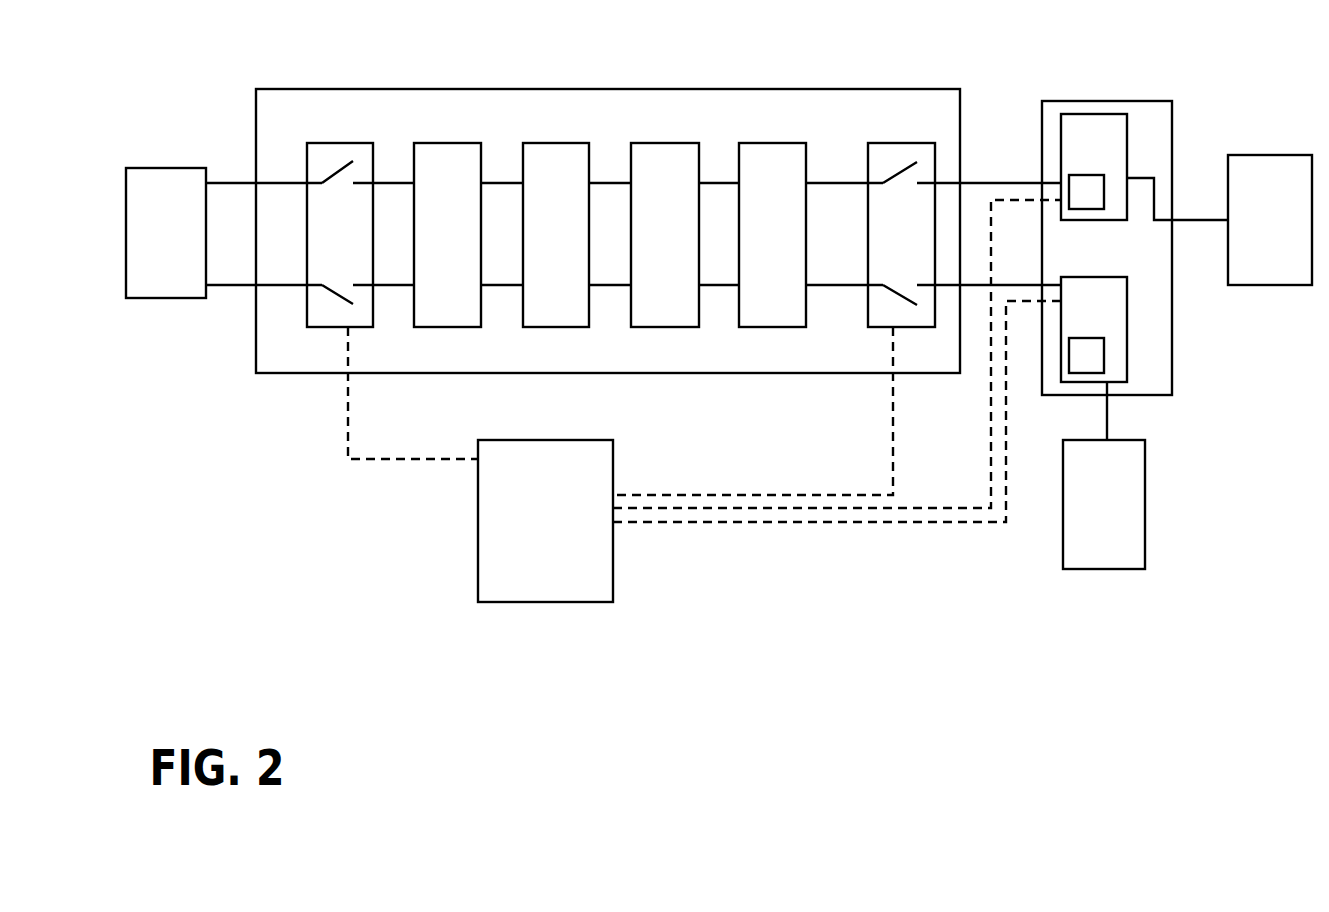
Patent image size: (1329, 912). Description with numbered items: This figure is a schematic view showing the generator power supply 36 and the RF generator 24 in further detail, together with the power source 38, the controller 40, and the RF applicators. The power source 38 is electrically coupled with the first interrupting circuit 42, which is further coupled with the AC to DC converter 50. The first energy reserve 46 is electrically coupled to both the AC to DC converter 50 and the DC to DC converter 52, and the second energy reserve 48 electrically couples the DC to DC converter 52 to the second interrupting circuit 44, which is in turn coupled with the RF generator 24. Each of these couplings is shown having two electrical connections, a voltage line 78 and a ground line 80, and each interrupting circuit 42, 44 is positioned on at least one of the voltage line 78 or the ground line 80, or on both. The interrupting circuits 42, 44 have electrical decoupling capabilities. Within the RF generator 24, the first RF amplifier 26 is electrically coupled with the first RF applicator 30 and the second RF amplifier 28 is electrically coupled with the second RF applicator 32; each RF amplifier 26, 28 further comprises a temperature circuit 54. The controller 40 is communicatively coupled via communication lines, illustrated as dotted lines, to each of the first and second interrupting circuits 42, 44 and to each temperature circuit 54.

The RF generator 24 is at (1099, 263).
The first RF amplifier 26 is at (1088, 160).
The second RF amplifier 28 is at (1088, 319).
The first RF applicator 30 is at (1258, 230).
The second RF applicator 32 is at (1097, 523).
The generator power supply 36 is at (493, 128).
The power source 38 is at (156, 253).
The controller 40 is at (538, 535).
The first interrupting circuit 42 is at (330, 253).
The second interrupting circuit 44 is at (891, 253).
The first energy reserve 46 is at (546, 253).
The second energy reserve 48 is at (762, 253).
The AC to DC converter 50 is at (437, 253).
The DC to DC converter 52 is at (655, 253).
The temperature circuit 54 is at (1078, 204).
The voltage line 78 is at (610, 178).
The ground line 80 is at (607, 285).